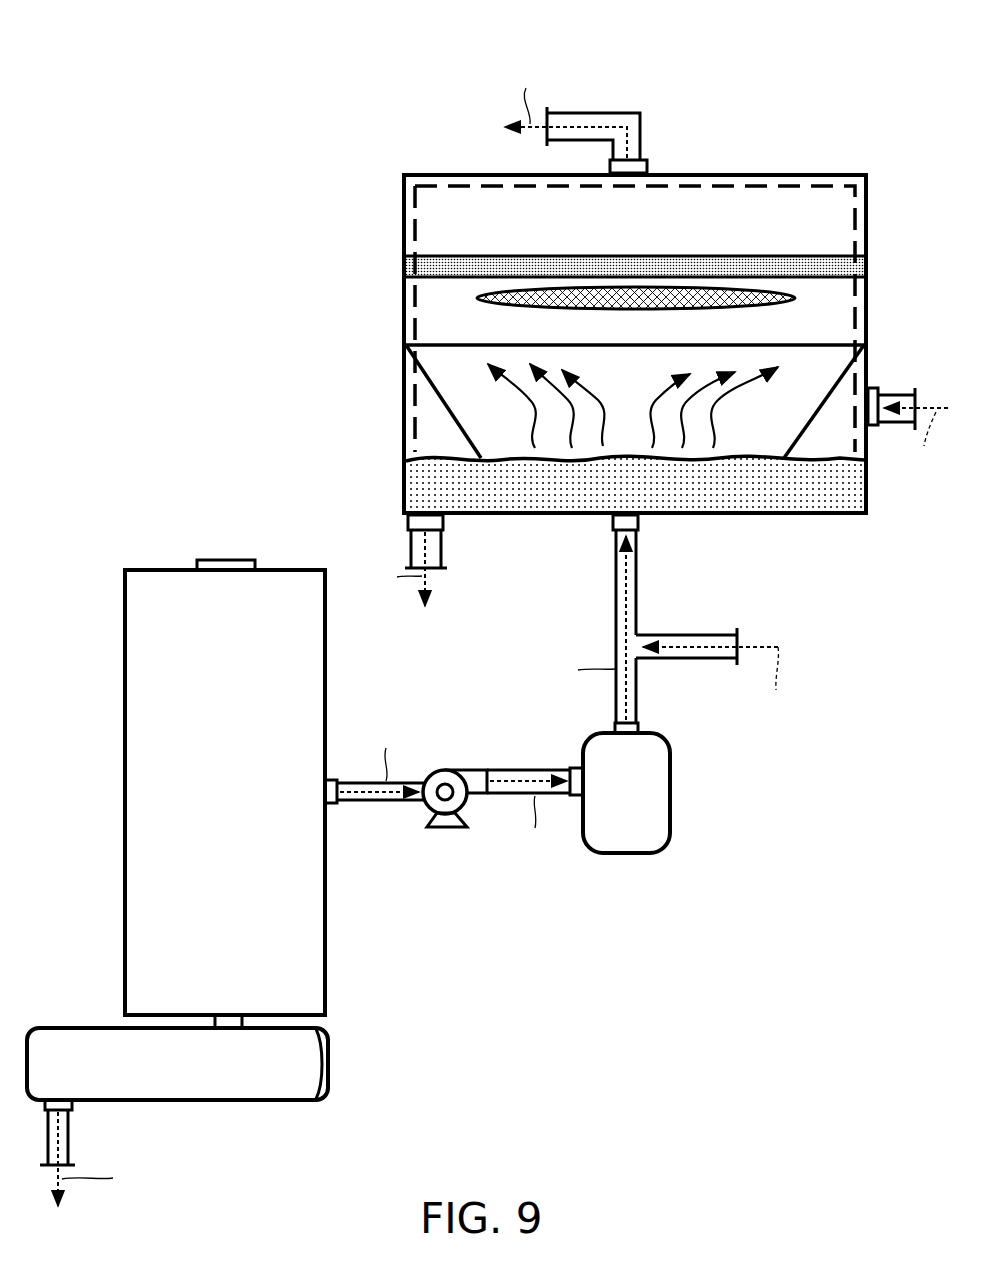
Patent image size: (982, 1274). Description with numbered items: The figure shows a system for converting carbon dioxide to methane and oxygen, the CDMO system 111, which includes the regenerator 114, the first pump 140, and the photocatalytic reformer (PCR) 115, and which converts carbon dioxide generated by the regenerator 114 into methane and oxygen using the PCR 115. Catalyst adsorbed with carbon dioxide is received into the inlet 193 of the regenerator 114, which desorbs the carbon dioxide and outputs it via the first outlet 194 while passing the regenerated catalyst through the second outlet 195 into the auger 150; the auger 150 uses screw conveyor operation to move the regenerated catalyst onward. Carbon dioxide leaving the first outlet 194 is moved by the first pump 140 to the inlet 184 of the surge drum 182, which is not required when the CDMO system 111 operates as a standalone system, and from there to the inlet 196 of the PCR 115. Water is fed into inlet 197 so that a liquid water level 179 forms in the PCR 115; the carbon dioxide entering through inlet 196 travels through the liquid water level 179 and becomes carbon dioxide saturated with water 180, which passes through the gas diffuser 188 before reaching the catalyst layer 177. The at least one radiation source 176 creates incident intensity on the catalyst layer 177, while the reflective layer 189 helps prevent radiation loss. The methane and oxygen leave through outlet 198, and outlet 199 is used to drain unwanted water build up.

The CDMO system 111 is at (188, 146).
The photocatalytic reformer (PCR) 115 is at (784, 172).
The reflective layer 189 is at (412, 212).
The catalyst layer 177 is at (404, 268).
The radiation source 176 is at (478, 298).
The gas diffuser 188 is at (440, 402).
The carbon dioxide saturated with water 180 is at (522, 432).
The liquid water level 179 is at (432, 489).
The outlet 198 is at (640, 160).
The inlet 197 is at (879, 387).
The outlet 199 is at (444, 529).
The inlet 196 is at (640, 529).
The regenerator 114 is at (265, 780).
The inlet 193 is at (222, 560).
The first outlet 194 is at (333, 806).
The second outlet 195 is at (246, 1021).
The first pump 140 is at (448, 770).
The inlet 184 is at (577, 767).
The surge drum 182 is at (607, 776).
The auger 150 is at (177, 1117).